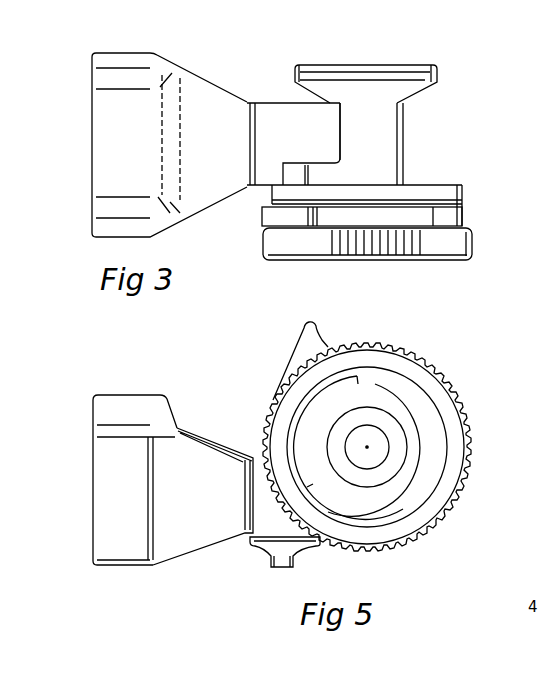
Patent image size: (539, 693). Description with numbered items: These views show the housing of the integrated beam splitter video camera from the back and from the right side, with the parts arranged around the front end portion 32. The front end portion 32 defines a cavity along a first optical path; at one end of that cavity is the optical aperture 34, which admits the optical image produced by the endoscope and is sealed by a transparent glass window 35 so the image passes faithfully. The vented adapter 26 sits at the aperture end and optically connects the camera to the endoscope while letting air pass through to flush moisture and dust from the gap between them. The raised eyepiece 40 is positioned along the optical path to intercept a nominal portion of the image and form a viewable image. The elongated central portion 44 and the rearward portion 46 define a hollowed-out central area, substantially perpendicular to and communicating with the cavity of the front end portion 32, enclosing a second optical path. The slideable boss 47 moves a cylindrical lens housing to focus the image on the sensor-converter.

In FIG. 3, the vented adapter 26 is at (465, 205).
In FIG. 5, the vented adapter 26 is at (440, 393).
In FIG. 3, the front end portion 32 is at (405, 148).
In FIG. 5, the optical aperture 34 is at (378, 462).
In FIG. 5, the transparent glass window 35 is at (378, 447).
In FIG. 3, the raised eyepiece 40 is at (435, 70).
In FIG. 3, the elongated central portion 44 is at (273, 103).
In FIG. 5, the elongated central portion 44 is at (203, 450).
In FIG. 3, the rearward portion 46 is at (122, 53).
In FIG. 5, the rearward portion 46 is at (135, 408).
In FIG. 5, the slideable boss 47 is at (277, 568).